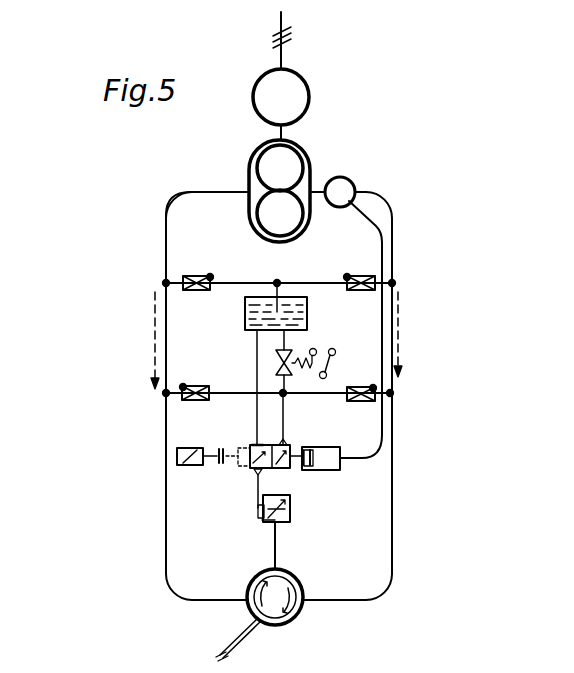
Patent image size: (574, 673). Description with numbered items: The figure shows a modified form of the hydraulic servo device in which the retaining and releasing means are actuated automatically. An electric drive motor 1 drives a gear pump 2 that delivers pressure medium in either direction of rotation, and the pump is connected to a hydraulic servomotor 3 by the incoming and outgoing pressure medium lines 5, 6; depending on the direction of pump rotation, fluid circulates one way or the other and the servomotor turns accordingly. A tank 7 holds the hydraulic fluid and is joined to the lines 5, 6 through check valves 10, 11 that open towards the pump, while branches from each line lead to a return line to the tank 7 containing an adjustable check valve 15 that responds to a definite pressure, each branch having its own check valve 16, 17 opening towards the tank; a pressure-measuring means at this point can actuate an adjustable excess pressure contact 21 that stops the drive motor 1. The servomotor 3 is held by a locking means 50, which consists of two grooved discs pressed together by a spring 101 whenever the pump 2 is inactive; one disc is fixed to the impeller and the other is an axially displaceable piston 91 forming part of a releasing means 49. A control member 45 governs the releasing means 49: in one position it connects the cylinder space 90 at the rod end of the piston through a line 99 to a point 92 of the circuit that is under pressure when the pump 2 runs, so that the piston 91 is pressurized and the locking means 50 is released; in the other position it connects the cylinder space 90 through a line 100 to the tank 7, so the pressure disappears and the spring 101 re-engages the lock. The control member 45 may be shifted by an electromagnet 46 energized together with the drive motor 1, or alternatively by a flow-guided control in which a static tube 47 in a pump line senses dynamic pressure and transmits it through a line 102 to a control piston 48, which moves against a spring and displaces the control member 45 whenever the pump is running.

The electric drive motor 1 is at (310, 92).
The gear pump 2 is at (308, 160).
The hydraulic servomotor 3 is at (292, 620).
The incoming pressure medium line 5 is at (392, 233).
The outgoing pressure medium line 6 is at (166, 216).
The tank 7 is at (308, 306).
The check valve 10 is at (368, 277).
The check valve 11 is at (183, 280).
The adjustable check valve 15 is at (278, 355).
The check valve 16 is at (380, 399).
The check valve 17 is at (193, 402).
The adjustable excess pressure contact 21 is at (337, 364).
The control member 45 is at (238, 467).
The electromagnet 46 is at (177, 457).
The static tube 47 is at (355, 188).
The control piston 48 is at (340, 468).
The releasing means 49 is at (290, 500).
The locking means 50 is at (303, 578).
The cylinder space 90 is at (268, 522).
The piston 91 is at (292, 518).
The pressure point 92 is at (283, 394).
The line 99 is at (287, 421).
The line 100 is at (258, 370).
The spring 101 is at (260, 508).
The line 102 is at (375, 223).